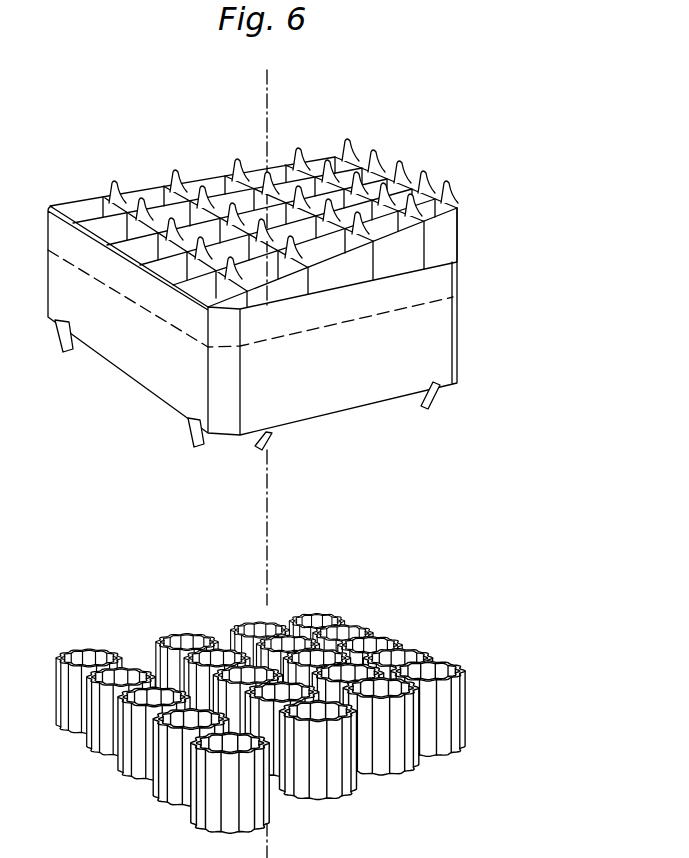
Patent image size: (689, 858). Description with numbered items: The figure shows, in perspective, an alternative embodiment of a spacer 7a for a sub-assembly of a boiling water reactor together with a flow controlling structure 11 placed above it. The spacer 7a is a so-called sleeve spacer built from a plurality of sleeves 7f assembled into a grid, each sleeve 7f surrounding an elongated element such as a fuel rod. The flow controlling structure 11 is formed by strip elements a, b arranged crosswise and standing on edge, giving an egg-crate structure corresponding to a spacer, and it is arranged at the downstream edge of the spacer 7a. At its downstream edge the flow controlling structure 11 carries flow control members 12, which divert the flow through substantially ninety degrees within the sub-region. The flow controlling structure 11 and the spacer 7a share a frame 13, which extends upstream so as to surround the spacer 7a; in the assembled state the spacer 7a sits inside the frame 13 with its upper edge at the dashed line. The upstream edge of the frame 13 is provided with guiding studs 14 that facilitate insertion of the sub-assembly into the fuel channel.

The flow controlling structure 11 is at (306, 268).
The flow control members 12 is at (176, 173).
The strip element a is at (373, 200).
The strip element b is at (367, 187).
The frame 13 is at (427, 333).
The guiding studs 14 is at (430, 403).
The spacer 7a is at (298, 713).
The sleeve 7f is at (460, 693).